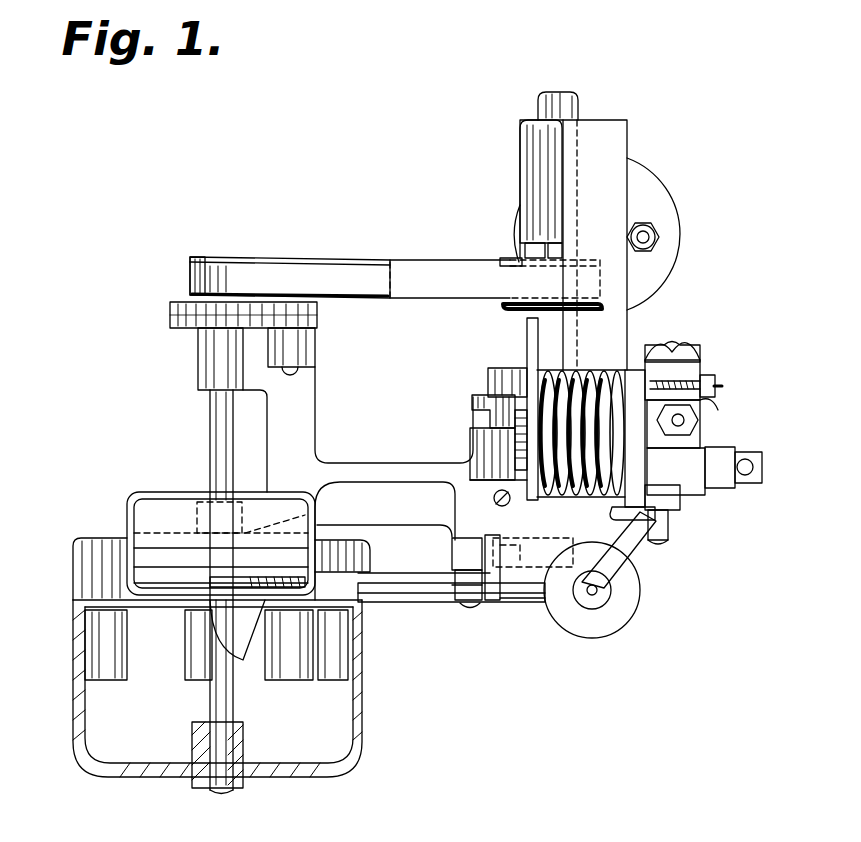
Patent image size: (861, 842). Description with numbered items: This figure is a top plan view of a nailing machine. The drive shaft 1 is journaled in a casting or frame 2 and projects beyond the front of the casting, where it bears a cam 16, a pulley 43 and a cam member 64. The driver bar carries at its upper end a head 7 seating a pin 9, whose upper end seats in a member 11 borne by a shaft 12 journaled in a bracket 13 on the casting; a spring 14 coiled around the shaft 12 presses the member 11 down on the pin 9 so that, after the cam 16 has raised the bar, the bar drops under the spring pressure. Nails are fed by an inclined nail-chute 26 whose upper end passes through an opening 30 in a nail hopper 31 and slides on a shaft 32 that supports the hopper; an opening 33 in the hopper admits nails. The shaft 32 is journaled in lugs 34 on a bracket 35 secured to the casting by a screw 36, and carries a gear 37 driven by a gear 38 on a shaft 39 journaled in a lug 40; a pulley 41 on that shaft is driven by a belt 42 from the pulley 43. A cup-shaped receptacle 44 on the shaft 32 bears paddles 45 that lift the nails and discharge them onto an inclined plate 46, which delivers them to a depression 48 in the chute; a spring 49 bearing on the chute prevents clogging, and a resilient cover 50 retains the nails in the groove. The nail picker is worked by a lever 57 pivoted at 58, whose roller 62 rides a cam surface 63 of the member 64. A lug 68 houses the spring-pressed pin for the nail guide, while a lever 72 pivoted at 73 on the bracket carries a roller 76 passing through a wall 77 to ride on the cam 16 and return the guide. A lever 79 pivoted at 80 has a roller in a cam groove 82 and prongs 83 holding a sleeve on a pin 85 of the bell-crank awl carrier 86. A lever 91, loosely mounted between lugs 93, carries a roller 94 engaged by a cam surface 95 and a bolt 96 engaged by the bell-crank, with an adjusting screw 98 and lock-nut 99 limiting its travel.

The drive shaft 1 is at (548, 110).
The casting or frame 2 is at (591, 245).
The head or enlargement 7 is at (592, 590).
The pin 9 is at (597, 596).
The member 11 is at (614, 560).
The shaft 12 is at (665, 438).
The bracket 13 is at (530, 356).
The spring 14 is at (578, 369).
The cam 16 is at (492, 549).
The nail-chute or raceway 26 is at (420, 603).
The opening 30 is at (372, 558).
The nail hopper 31 is at (90, 577).
The shaft 32 is at (212, 421).
The opening 33 is at (163, 555).
The lugs 34 is at (200, 354).
The bracket 35 is at (358, 483).
The screw 36 is at (494, 501).
The gear 37 is at (176, 306).
The gear 38 is at (320, 315).
The shaft 39 is at (298, 372).
The lug 40 is at (318, 350).
The pulley 41 is at (325, 259).
The belt 42 is at (495, 279).
The pulley 43 is at (505, 260).
The cup-shaped receptacle 44 is at (358, 714).
The paddles 45 is at (108, 672).
The inclined chute or plate 46 is at (245, 662).
The depression 48 is at (235, 580).
The spring 49 is at (190, 578).
The plate or cover 50 is at (440, 604).
The lever 57 is at (670, 532).
The pivot 58 is at (683, 518).
The roller 62 is at (640, 496).
The cam surface 63 is at (492, 481).
The member 64 is at (476, 455).
The lug 68 is at (540, 590).
The lever 72 is at (454, 557).
The pivot 73 is at (472, 603).
The roller 76 is at (452, 566).
The wall 77 is at (512, 555).
The lever 79 is at (692, 420).
The pivot 80 is at (738, 482).
The cam groove 82 is at (480, 416).
The prongs 83 is at (686, 452).
The pin 85 is at (735, 460).
The bell-crank awl carrier 86 is at (660, 546).
The lever 91 is at (687, 372).
The lugs 93 is at (672, 342).
The roller 94 is at (640, 368).
The cam surface 95 is at (490, 378).
The bolt 96 is at (750, 466).
The screw 98 is at (713, 392).
The lock-nut 99 is at (716, 380).